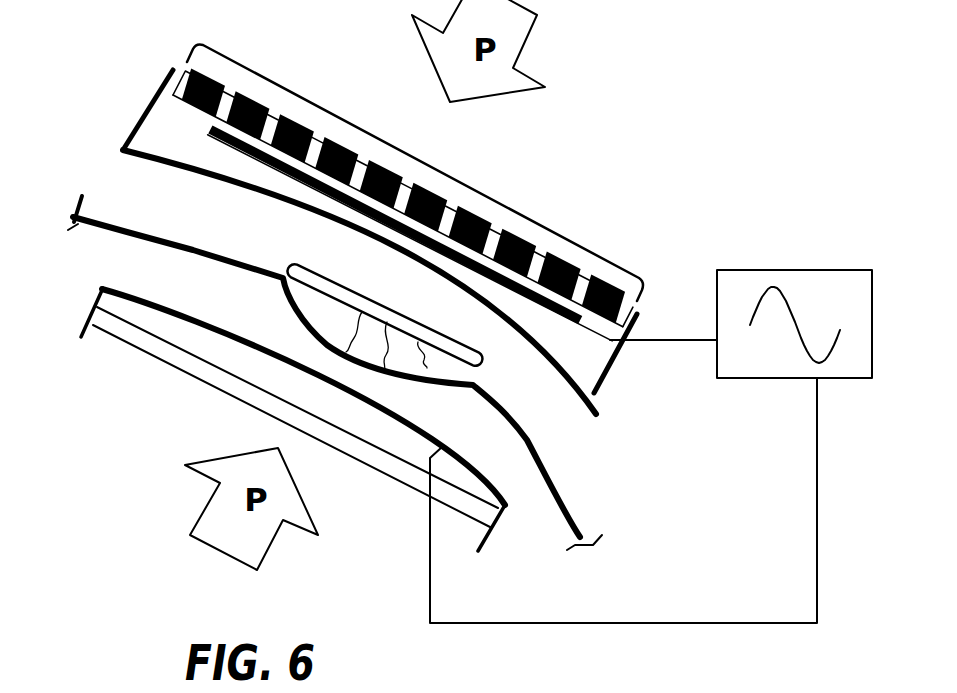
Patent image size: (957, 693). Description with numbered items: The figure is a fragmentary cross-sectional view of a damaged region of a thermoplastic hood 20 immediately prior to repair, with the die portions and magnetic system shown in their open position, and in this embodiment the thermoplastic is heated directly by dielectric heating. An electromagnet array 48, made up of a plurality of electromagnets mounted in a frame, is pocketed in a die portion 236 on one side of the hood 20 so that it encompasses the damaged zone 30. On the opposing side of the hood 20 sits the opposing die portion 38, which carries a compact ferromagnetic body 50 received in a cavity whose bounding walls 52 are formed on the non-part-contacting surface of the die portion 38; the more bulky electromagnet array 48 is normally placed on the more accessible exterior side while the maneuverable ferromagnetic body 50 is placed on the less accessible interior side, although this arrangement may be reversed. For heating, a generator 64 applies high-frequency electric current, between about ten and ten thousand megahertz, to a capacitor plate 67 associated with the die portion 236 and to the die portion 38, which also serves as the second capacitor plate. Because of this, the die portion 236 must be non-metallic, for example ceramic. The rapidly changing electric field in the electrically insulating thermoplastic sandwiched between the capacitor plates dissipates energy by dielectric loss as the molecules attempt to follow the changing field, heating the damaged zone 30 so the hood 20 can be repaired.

The electromagnet array 48 is at (437, 167).
The capacitor plate 67 is at (537, 285).
The damaged zone 30 is at (418, 296).
The generator 64 is at (854, 311).
The die portion 236 is at (577, 364).
The hood 20 is at (595, 493).
The ferromagnetic body 50 is at (143, 350).
The die portion 38 is at (242, 340).
The bounding walls 52 is at (493, 530).